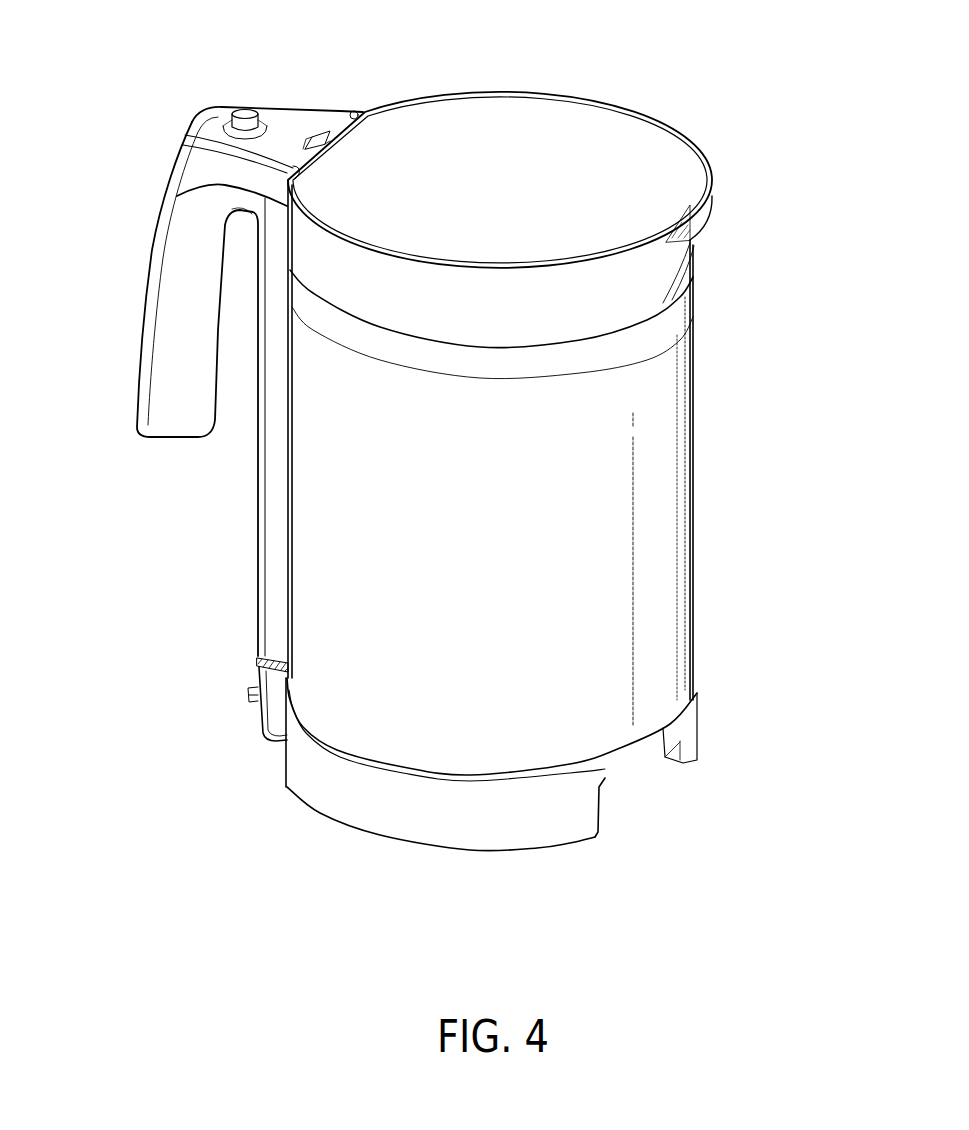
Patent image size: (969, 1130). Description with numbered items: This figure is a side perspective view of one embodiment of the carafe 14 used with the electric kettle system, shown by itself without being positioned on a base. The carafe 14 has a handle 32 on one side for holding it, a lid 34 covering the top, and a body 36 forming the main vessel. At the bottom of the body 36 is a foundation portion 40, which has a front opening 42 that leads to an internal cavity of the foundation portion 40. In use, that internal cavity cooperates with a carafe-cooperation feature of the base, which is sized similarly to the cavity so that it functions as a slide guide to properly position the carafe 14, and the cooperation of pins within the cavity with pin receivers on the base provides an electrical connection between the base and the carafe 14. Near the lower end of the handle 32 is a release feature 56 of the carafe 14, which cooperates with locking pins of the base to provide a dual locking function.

The carafe 14 is at (781, 142).
The handle 32 is at (173, 332).
The lid 34 is at (473, 145).
The body 36 is at (720, 680).
The foundation portion 40 is at (720, 840).
The front opening 42 is at (618, 787).
The release feature 56 is at (248, 686).